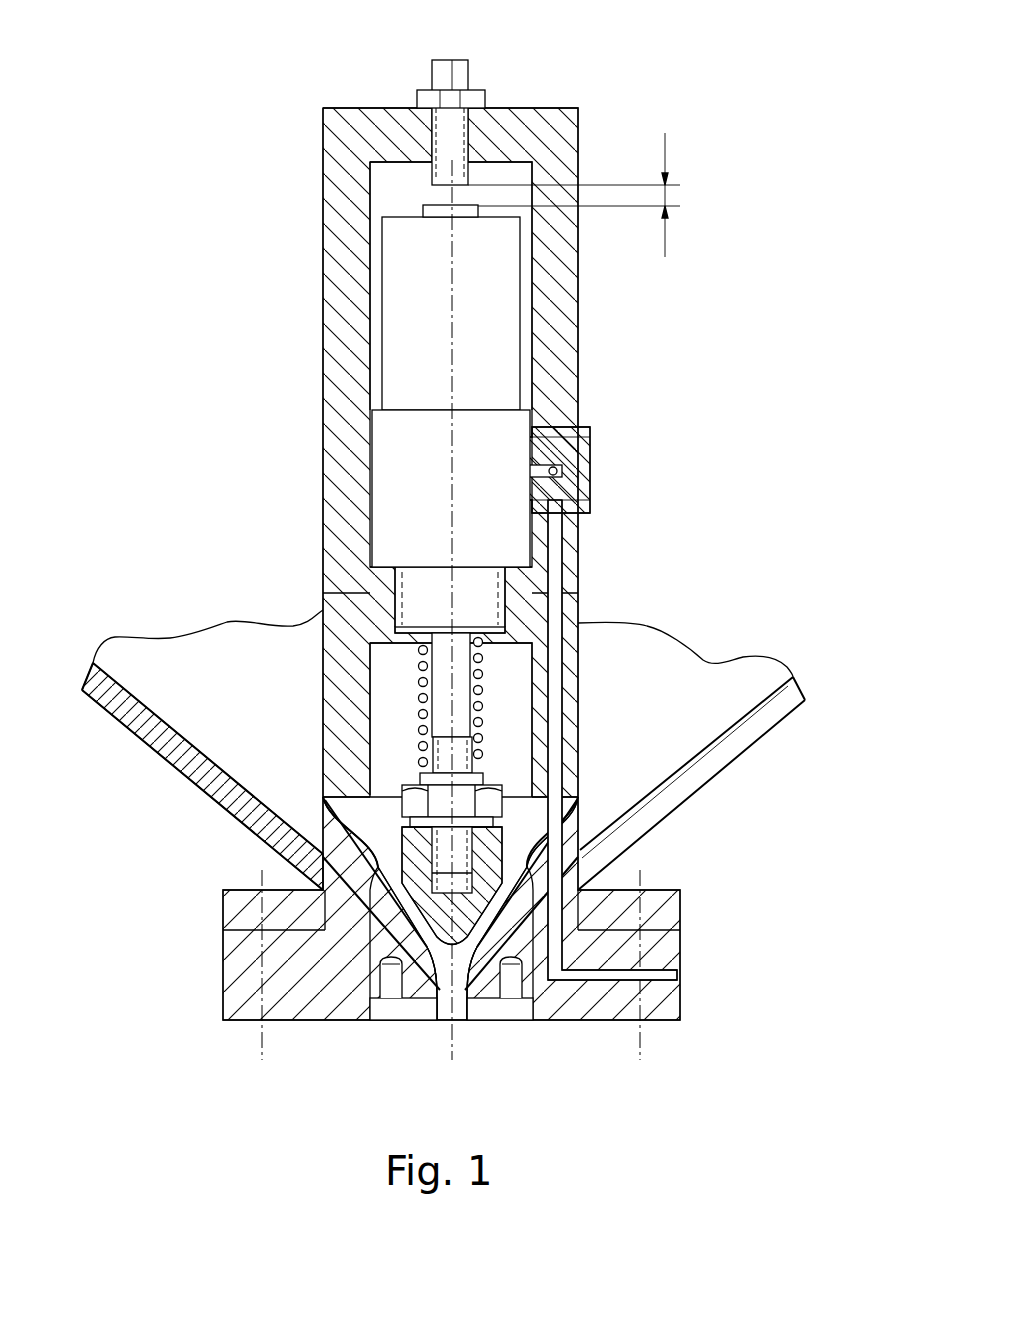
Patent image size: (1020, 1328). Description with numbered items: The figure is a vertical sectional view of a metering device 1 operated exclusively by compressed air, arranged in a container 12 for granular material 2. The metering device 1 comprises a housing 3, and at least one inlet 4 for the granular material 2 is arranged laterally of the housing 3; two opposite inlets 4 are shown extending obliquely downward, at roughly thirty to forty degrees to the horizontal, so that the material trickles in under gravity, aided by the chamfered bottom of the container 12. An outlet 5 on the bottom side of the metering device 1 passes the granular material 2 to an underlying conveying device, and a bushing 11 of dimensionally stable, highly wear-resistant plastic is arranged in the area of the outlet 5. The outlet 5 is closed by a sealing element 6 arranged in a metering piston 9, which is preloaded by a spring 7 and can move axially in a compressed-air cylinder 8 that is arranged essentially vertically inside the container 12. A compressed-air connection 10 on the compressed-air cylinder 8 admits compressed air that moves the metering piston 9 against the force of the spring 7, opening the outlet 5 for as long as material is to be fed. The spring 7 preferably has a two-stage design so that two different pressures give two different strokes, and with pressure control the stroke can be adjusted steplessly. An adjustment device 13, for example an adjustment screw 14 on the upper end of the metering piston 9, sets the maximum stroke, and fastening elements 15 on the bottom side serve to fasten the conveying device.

The metering device 1 is at (457, 555).
The granular material 2 is at (637, 730).
The housing 3 is at (355, 390).
The inlet 4 is at (360, 848).
The outlet 5 is at (460, 970).
The sealing element 6 is at (440, 915).
The spring 7 is at (418, 697).
The compressed-air cylinder 8 is at (483, 378).
The metering piston 9 is at (470, 666).
The compressed-air connection 10 is at (577, 465).
The bushing 11 is at (480, 967).
The container 12 is at (747, 733).
The adjustment device 13 is at (454, 92).
The adjustment screw 14 is at (457, 80).
The fastening elements 15 is at (392, 980).